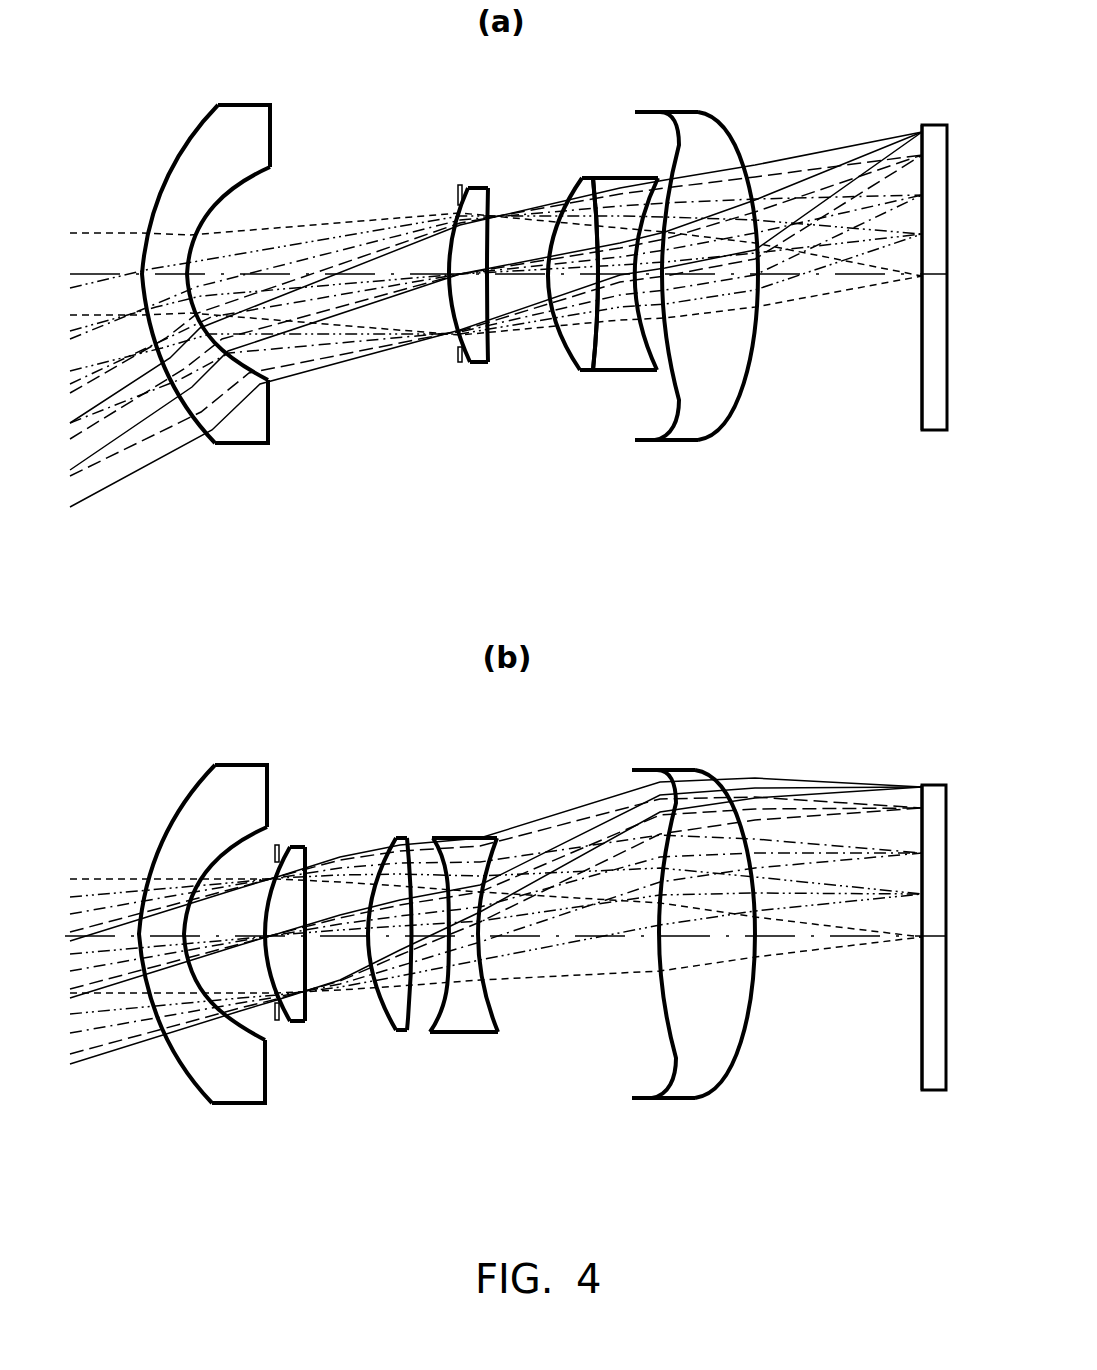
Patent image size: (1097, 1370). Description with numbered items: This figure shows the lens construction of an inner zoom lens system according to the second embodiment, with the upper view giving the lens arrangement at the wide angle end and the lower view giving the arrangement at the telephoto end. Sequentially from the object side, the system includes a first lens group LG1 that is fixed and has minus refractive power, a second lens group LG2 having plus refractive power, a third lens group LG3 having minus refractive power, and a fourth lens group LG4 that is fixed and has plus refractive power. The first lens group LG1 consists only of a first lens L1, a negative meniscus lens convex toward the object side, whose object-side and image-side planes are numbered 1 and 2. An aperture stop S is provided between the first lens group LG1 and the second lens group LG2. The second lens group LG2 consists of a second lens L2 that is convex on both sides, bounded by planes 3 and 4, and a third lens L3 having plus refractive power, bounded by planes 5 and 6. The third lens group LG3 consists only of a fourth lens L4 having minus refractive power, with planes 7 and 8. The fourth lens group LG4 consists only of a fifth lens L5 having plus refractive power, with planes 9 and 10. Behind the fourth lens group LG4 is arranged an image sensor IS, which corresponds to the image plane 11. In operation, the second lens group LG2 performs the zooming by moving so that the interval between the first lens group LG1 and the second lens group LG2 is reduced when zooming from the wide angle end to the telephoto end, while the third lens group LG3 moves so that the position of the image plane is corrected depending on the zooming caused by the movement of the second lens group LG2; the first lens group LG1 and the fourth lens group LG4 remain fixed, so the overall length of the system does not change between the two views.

The object-side plane of first lens 1 is at (198, 120).
The image-side plane of first lens 2 is at (272, 127).
The object-side plane of second lens 3 is at (468, 187).
The image-side plane of second lens 4 is at (488, 188).
The object-side plane of third lens 5 is at (582, 178).
The image-side plane of third lens 6 is at (587, 215).
The object-side plane of fourth lens 7 is at (600, 178).
The image-side plane of fourth lens 8 is at (658, 178).
The object-side plane of fifth lens 9 is at (652, 126).
The image-side plane of fifth lens 10 is at (722, 128).
The image plane 11 is at (921, 142).
The aperture stop S is at (458, 188).
The first lens L1 is at (217, 603).
The second lens L2 is at (379, 606).
The third lens L3 is at (483, 617).
The fourth lens L4 is at (544, 582).
The fifth lens L5 is at (697, 594).
The first lens group LG1 is at (217, 649).
The second lens group LG2 is at (431, 644).
The third lens group LG3 is at (544, 620).
The fourth lens group LG4 is at (697, 632).
The image sensor IS is at (905, 607).